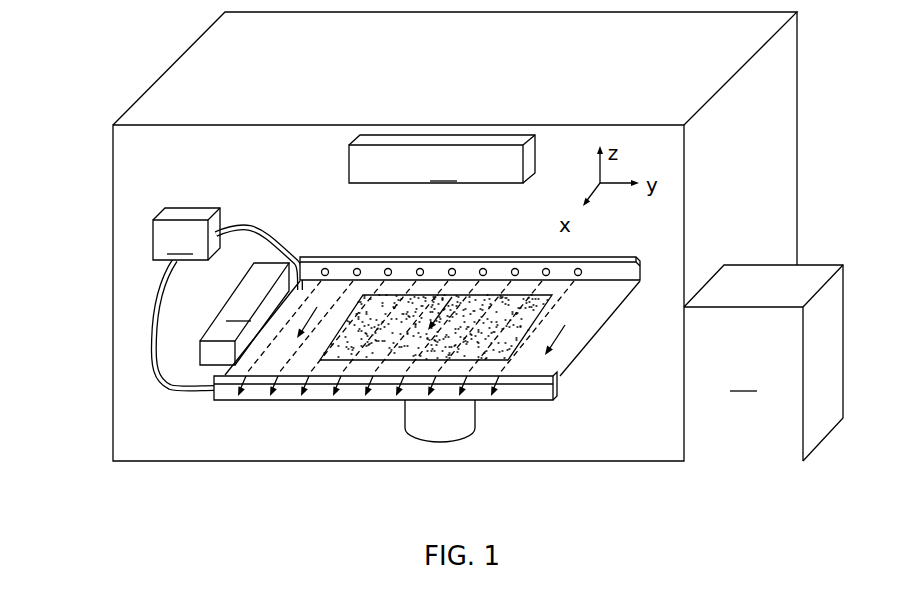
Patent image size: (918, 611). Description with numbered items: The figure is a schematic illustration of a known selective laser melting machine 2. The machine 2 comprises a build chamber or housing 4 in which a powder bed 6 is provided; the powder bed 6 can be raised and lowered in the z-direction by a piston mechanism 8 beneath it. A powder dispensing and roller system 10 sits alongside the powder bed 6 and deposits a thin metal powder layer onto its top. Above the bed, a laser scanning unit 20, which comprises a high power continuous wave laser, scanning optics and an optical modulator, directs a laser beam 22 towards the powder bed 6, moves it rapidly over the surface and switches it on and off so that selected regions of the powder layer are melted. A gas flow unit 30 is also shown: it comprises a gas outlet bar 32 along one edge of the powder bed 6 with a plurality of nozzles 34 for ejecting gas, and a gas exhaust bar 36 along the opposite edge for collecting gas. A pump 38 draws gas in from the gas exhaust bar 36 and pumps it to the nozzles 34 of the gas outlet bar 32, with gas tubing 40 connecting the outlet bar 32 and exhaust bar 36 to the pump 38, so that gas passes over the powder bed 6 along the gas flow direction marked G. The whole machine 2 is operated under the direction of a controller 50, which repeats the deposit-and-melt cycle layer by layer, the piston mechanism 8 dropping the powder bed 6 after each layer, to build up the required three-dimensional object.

The selective laser melting machine 2 is at (89, 532).
The build chamber or housing 4 is at (113, 170).
The powder bed 6 is at (548, 312).
The piston mechanism 8 is at (465, 422).
The powder dispensing and roller system 10 is at (244, 314).
The laser scanning unit 20 is at (442, 159).
The laser beam 22 is at (436, 272).
The gas flow unit 30 is at (407, 292).
The gas outlet bar 32 is at (475, 249).
The nozzles 34 is at (483, 268).
The gas exhaust bar 36 is at (548, 392).
The pump 38 is at (186, 234).
The gas tubing 40 is at (273, 232).
The controller 50 is at (763, 363).